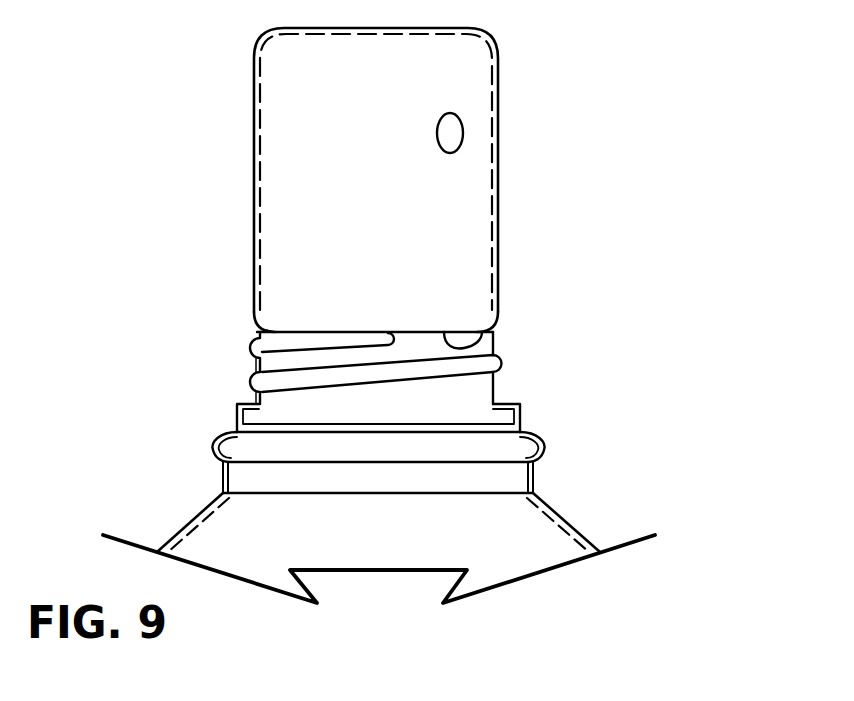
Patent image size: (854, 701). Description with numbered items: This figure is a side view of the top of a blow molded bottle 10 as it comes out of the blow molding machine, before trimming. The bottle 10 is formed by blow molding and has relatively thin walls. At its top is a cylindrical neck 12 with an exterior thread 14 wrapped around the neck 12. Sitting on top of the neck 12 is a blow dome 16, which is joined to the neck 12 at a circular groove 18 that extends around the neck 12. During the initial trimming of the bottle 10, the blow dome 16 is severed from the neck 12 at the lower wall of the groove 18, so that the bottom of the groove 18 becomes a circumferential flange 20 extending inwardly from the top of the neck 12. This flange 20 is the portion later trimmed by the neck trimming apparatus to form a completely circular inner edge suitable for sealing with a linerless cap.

The bottle 10 is at (613, 316).
The cylindrical neck 12 is at (258, 365).
The exterior thread 14 is at (505, 363).
The blow dome 16 is at (498, 77).
The circular groove 18 is at (265, 328).
The circumferential flange 20 is at (444, 332).